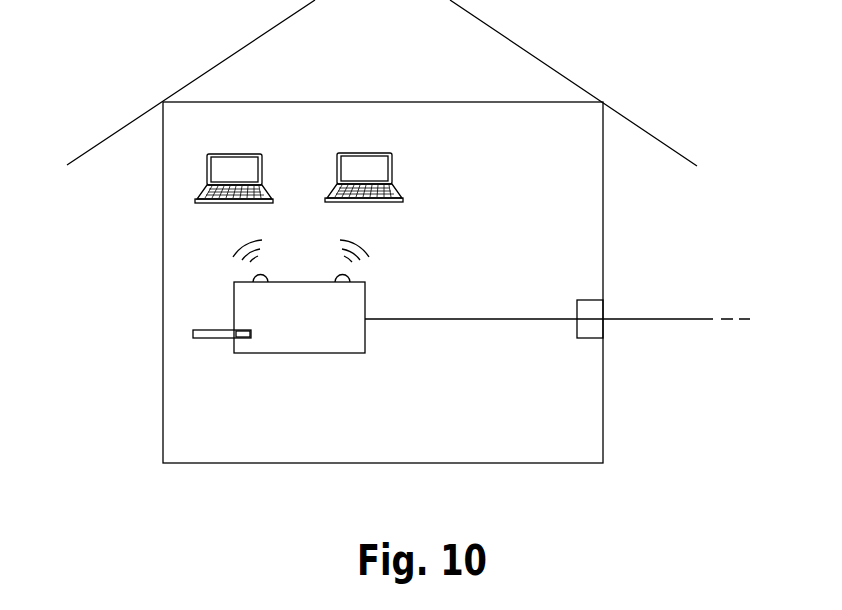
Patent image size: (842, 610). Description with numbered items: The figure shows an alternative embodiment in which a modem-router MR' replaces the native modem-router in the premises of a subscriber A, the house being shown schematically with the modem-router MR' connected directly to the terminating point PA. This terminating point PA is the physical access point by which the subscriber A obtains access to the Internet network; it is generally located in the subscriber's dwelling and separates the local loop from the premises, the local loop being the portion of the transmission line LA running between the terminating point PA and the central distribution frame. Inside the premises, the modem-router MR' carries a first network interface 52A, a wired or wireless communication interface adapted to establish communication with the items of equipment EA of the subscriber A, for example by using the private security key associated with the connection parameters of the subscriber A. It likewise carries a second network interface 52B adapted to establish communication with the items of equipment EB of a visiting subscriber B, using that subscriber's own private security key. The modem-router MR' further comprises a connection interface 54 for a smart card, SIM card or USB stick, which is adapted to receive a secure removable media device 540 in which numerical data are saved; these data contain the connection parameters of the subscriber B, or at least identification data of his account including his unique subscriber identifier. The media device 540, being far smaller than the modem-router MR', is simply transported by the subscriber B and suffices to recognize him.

The subscriber A is at (382, 231).
The items of equipment of subscriber A EA is at (225, 154).
The items of equipment of subscriber B EB is at (390, 202).
The modem-router MR' is at (299, 357).
The network interface 52A is at (254, 277).
The network interface 52B is at (338, 273).
The secure removable media device 540 is at (193, 335).
The connection interface 54 is at (250, 333).
The transmission line LA is at (652, 320).
The terminating point PA is at (593, 313).